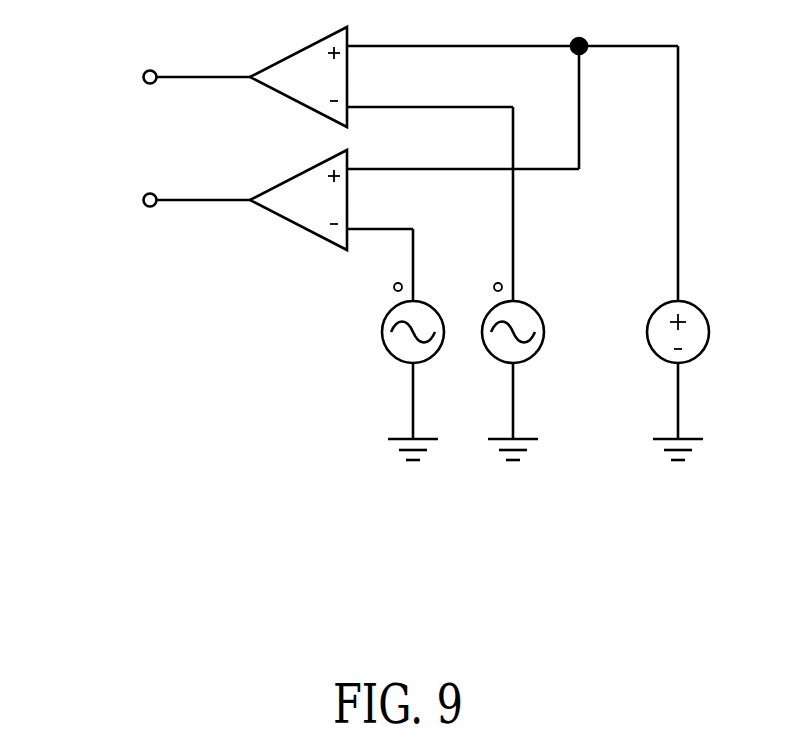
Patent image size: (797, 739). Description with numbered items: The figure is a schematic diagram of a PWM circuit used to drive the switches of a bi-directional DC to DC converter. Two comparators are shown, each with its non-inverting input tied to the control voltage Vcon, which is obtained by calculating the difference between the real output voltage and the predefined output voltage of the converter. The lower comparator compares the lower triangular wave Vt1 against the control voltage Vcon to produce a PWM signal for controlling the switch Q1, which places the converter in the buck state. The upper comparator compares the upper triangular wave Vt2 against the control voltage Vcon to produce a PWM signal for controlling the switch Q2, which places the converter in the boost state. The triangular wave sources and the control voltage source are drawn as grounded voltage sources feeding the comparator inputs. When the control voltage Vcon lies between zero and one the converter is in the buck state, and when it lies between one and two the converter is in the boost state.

The switch Q2 is at (133, 77).
The switch Q1 is at (133, 200).
The lower triangular wave Vt1 is at (390, 371).
The upper triangular wave Vt2 is at (536, 371).
The control voltage Vcon is at (705, 380).